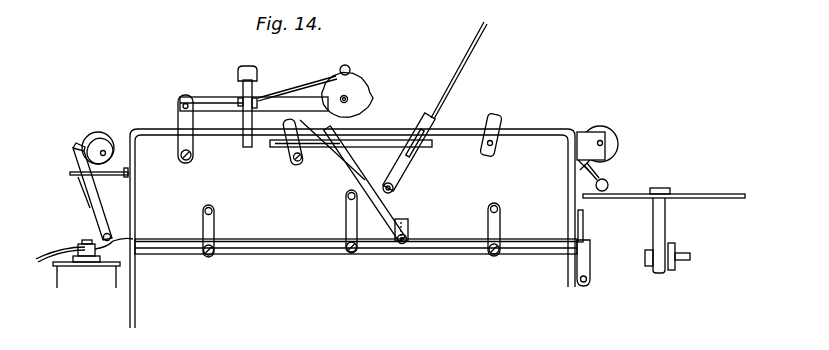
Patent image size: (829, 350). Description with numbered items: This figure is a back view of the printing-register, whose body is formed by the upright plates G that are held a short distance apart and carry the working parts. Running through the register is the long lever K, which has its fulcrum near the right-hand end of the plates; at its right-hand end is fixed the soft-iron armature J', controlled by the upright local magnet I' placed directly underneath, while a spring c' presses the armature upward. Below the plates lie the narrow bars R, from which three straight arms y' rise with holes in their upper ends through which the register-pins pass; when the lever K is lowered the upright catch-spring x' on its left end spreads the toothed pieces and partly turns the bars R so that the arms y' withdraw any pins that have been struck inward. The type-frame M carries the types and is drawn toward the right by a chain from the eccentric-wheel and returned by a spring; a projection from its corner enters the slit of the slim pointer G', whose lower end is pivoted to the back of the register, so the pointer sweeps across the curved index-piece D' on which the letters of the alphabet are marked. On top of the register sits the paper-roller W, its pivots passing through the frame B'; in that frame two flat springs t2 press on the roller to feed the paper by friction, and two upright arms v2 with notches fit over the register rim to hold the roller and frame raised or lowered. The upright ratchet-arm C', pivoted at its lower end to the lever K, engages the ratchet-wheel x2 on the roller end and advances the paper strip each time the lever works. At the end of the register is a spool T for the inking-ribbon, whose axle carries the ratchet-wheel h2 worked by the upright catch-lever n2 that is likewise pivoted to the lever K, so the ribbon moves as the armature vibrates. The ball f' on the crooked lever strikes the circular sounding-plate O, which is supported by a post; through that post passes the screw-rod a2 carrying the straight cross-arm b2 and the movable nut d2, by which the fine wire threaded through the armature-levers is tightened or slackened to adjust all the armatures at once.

The upright plates G is at (352, 228).
The narrow bars R is at (356, 255).
The straight arms y' is at (358, 223).
The curved index-piece D' is at (340, 130).
The frame B' is at (254, 105).
The upright arms v2 is at (240, 106).
The flat springs t2 is at (297, 85).
The paper-roller W is at (350, 91).
The ratchet-wheel x2 is at (353, 100).
The type-frame M is at (351, 148).
The spring c' is at (354, 182).
The pointer G' is at (435, 107).
The spool T is at (99, 145).
The ratchet-wheel h2 is at (100, 150).
The upright catch-lever n2 is at (92, 192).
The long lever K is at (123, 225).
The upright ratchet-arm C' is at (68, 253).
The soft-iron armature J' is at (79, 246).
The upright local magnet I' is at (86, 278).
The pulley T' is at (604, 144).
The upright catch-spring x' is at (586, 168).
The ball f' is at (601, 177).
The circular sounding-plate O is at (664, 188).
The post s' is at (652, 235).
The straight cross-arm b2 is at (640, 257).
The movable nut d2 is at (674, 249).
The screw-rod a2 is at (689, 259).